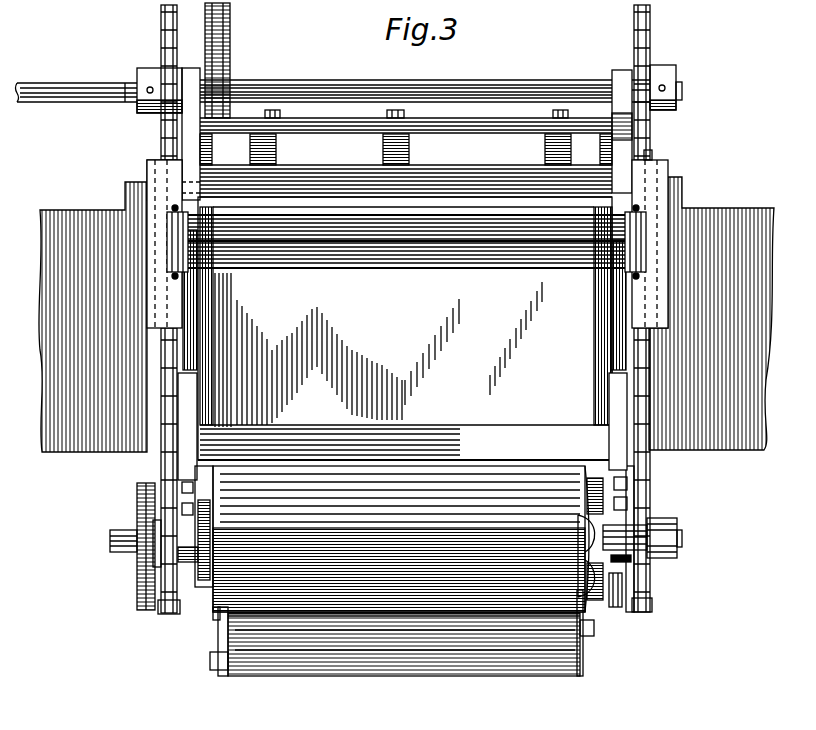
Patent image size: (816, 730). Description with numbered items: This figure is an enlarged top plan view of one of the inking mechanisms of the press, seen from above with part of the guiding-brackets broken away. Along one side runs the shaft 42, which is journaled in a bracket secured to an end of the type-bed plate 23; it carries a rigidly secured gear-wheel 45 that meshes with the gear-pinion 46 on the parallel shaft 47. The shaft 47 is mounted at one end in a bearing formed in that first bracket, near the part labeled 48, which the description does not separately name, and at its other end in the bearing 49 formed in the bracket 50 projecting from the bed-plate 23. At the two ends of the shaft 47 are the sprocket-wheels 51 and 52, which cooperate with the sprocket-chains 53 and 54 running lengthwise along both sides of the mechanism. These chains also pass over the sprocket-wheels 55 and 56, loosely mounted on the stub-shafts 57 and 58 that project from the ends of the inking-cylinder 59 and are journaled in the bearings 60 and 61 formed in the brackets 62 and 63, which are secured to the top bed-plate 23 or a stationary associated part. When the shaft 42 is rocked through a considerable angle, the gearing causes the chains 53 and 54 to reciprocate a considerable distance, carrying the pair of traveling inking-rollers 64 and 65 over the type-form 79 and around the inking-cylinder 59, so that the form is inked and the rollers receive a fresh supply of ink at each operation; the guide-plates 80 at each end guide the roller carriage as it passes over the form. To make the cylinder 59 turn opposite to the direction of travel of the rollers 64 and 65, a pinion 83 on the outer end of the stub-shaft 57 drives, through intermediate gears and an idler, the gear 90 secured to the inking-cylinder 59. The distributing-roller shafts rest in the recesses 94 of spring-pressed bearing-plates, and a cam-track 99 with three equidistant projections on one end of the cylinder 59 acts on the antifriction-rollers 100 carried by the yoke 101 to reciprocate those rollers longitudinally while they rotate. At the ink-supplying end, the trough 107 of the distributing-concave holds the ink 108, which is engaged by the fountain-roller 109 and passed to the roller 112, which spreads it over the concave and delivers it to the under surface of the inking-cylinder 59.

The type-bed plate 23 is at (406, 314).
The shaft 42 is at (52, 83).
The gear-wheel 45 is at (230, 27).
The gear-pinion 46 is at (279, 80).
The shaft 47 is at (130, 103).
The bearing block 48 is at (195, 72).
The bearing 49 is at (632, 75).
The bracket 50 is at (624, 147).
The sprocket-wheel 51 is at (167, 23).
The sprocket-wheel 52 is at (652, 23).
The sprocket-chain 53 is at (160, 152).
The sprocket-chain 54 is at (650, 152).
The sprocket-wheel 55 is at (177, 620).
The sprocket-wheel 56 is at (644, 610).
The stub-shaft 57 is at (110, 548).
The stub-shaft 58 is at (602, 600).
The inking-cylinder 59 is at (401, 539).
The bearing 60 is at (187, 535).
The bearing 61 is at (575, 535).
The bracket 62 is at (187, 412).
The bracket 63 is at (617, 413).
The inking-roller 64 is at (293, 228).
The inking-roller 65 is at (359, 262).
The type-form 79 is at (378, 350).
The guide-plate 80 is at (407, 244).
The pinion 83 is at (140, 595).
The gear 90 is at (203, 580).
The recess 94 is at (622, 580).
The cam-track 99 is at (654, 555).
The antifriction-roller 100 is at (603, 490).
The yoke 101 is at (616, 532).
The trough 107 is at (230, 672).
The ink 108 is at (400, 655).
The fountain-roller 109 is at (290, 640).
The roller 112 is at (492, 613).